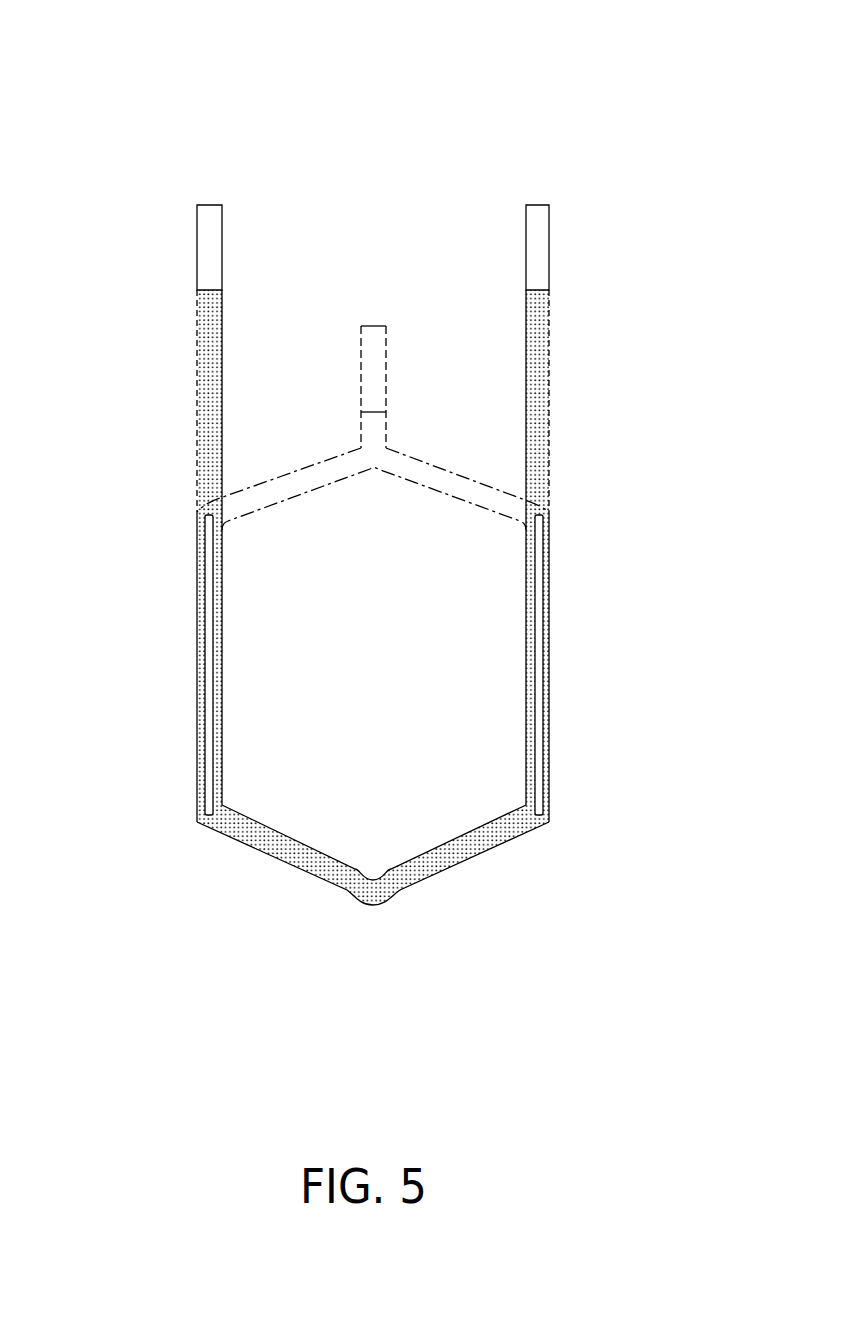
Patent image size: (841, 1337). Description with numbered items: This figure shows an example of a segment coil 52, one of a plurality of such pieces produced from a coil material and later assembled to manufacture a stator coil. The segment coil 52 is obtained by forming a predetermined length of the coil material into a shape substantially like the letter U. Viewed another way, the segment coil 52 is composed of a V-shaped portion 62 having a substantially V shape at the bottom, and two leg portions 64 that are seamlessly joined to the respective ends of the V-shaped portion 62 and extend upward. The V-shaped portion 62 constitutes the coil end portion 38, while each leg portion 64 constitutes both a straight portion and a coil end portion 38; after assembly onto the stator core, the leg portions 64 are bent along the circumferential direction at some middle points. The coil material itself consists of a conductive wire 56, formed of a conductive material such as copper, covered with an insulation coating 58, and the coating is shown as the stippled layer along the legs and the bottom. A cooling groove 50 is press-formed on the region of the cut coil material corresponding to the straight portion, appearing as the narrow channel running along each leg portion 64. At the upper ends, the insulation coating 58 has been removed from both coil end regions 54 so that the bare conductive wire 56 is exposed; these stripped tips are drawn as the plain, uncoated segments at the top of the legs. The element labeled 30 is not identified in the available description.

The segment coil 52 is at (280, 185).
The coil end region 54 is at (371, 247).
The conductive wire 56 is at (211, 246).
The insulation coating 58 is at (543, 336).
The leg portion 64 is at (208, 634).
The cooling groove 50 is at (213, 665).
The coil end portion 38 is at (275, 480).
The V-shaped portion 62 is at (287, 850).
The U-shaped tube 30 is at (373, 894).